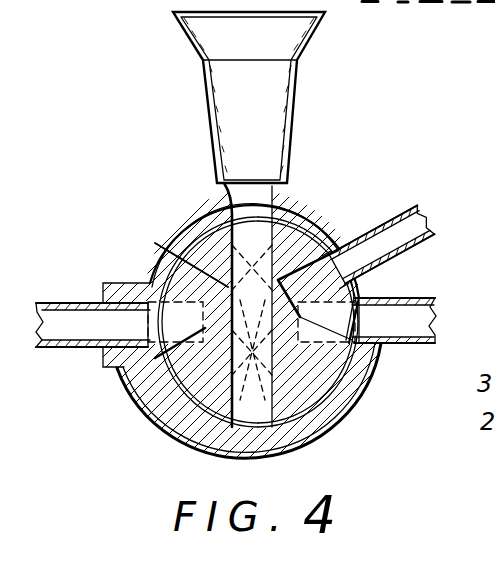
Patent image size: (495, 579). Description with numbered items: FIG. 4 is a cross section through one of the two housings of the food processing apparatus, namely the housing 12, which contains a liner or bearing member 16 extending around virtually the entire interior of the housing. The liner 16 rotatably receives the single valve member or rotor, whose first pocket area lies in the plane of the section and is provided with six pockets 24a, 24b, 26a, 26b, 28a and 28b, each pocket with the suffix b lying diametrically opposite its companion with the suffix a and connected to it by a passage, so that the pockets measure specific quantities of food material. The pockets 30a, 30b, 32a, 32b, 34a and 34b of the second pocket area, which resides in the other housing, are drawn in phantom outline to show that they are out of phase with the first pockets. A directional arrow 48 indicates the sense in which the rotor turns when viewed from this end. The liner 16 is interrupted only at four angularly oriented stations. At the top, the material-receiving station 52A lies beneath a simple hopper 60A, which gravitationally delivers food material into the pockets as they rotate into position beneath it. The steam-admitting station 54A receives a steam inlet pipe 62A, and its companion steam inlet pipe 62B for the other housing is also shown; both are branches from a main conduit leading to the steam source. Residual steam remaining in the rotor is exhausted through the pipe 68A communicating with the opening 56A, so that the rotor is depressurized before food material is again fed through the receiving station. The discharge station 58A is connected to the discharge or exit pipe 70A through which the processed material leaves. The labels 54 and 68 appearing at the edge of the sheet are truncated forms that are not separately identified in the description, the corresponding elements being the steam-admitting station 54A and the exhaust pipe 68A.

The housing 12 is at (185, 447).
The liner or bearing member 16 is at (291, 425).
The pocket 24a is at (240, 214).
The pocket 24b is at (253, 418).
The pocket 26a is at (494, 246).
The pocket 26b is at (160, 383).
The pocket 28a is at (327, 370).
The pocket 28b is at (195, 262).
The pocket 30a is at (298, 200).
The pocket 30b is at (178, 430).
The pocket 32a is at (368, 364).
The pocket 32b is at (145, 262).
The pocket 34a is at (330, 417).
The pocket 34b is at (208, 213).
The directional arrow 48 is at (128, 140).
The port or opening 52A is at (253, 205).
The conduit 54 is at (481, 284).
The port or opening 54A is at (366, 298).
The port or opening 56A is at (330, 280).
The port or opening 58A is at (138, 320).
The hopper 60A is at (277, 82).
The steam inlet pipe 62A is at (432, 317).
The steam inlet pipe 62B is at (423, 334).
The fitting 68 is at (482, 152).
The exhaust pipe 68A is at (397, 208).
The discharge or exit pipe 70A is at (68, 302).